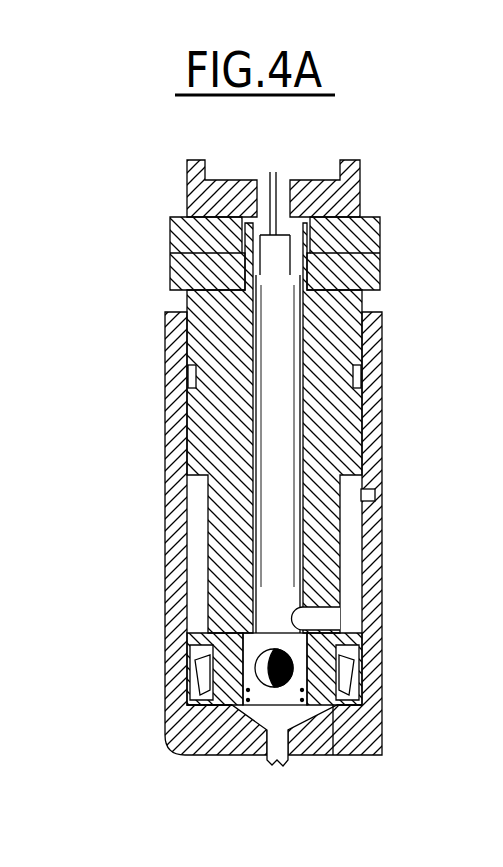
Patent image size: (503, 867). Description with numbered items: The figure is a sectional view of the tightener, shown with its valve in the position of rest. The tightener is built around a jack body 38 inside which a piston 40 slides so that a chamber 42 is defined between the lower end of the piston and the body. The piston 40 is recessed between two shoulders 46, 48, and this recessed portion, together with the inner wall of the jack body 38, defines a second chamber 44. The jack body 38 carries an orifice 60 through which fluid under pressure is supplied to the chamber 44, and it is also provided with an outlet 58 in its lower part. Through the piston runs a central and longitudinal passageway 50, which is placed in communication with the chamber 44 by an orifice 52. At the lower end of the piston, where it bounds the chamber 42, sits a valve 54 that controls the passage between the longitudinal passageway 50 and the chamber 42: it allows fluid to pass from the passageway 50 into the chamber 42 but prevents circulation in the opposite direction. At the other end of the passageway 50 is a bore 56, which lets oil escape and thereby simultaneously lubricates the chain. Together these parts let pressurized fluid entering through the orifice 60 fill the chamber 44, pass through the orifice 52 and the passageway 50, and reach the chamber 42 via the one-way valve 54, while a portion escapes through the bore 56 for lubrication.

The jack body 38 is at (372, 396).
The piston 40 is at (347, 440).
The chamber 42 is at (262, 720).
The chamber 44 is at (360, 567).
The shoulder 46 is at (195, 480).
The shoulder 48 is at (197, 636).
The central and longitudinal passageway 50 is at (257, 396).
The orifice 52 is at (328, 613).
The valve 54 is at (243, 680).
The bore 56 is at (271, 205).
The outlet 58 is at (335, 707).
The orifice 60 is at (372, 492).